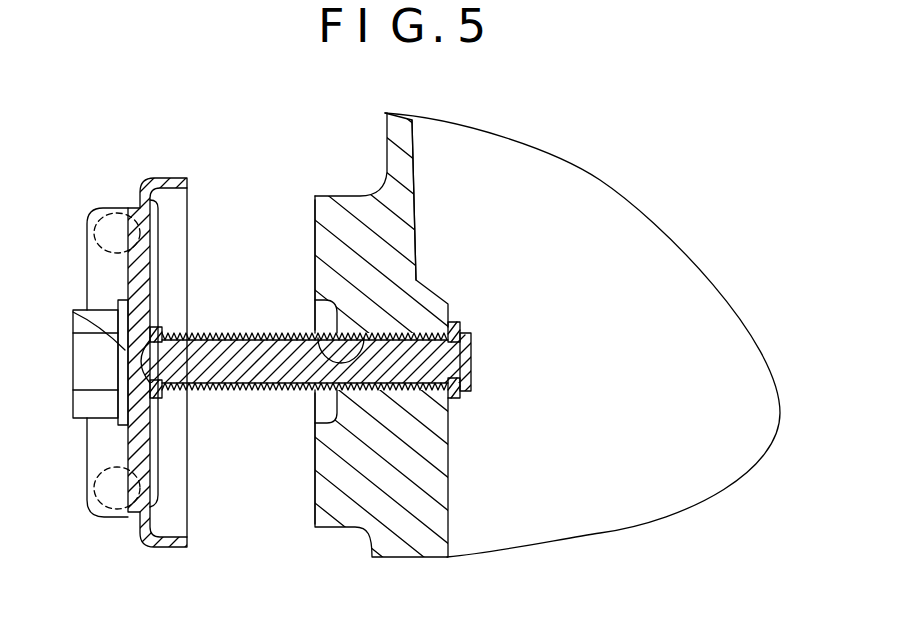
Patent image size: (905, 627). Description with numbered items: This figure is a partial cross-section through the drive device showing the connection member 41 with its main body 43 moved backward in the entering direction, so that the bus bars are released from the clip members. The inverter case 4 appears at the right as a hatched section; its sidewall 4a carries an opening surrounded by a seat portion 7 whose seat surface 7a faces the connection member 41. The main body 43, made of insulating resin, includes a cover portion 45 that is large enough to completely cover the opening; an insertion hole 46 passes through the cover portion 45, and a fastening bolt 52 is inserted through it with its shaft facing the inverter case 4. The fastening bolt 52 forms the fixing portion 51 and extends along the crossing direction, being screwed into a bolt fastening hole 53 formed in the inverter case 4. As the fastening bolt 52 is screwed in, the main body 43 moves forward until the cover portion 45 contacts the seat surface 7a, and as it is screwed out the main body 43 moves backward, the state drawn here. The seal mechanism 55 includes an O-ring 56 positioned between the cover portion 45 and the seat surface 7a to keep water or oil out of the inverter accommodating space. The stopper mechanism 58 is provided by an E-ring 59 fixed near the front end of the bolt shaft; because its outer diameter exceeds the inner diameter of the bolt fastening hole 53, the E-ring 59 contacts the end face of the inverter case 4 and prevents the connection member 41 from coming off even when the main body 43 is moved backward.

The sidewall 4a is at (537, 307).
The inverter case 4 is at (383, 126).
The seat portion 7 is at (362, 330).
The seat surface 7a is at (313, 227).
The connection member 41 is at (140, 190).
The main body 43 is at (88, 466).
The cover portion 45 is at (78, 400).
The insertion hole 46 is at (84, 322).
The fixing portion 51 is at (255, 392).
The fastening bolt 52 is at (326, 397).
The bolt fastening hole 53 is at (313, 333).
The seal mechanism 55 is at (162, 243).
The O-ring 56 is at (105, 219).
The stopper mechanism 58 is at (468, 325).
The E-ring 59 is at (456, 323).